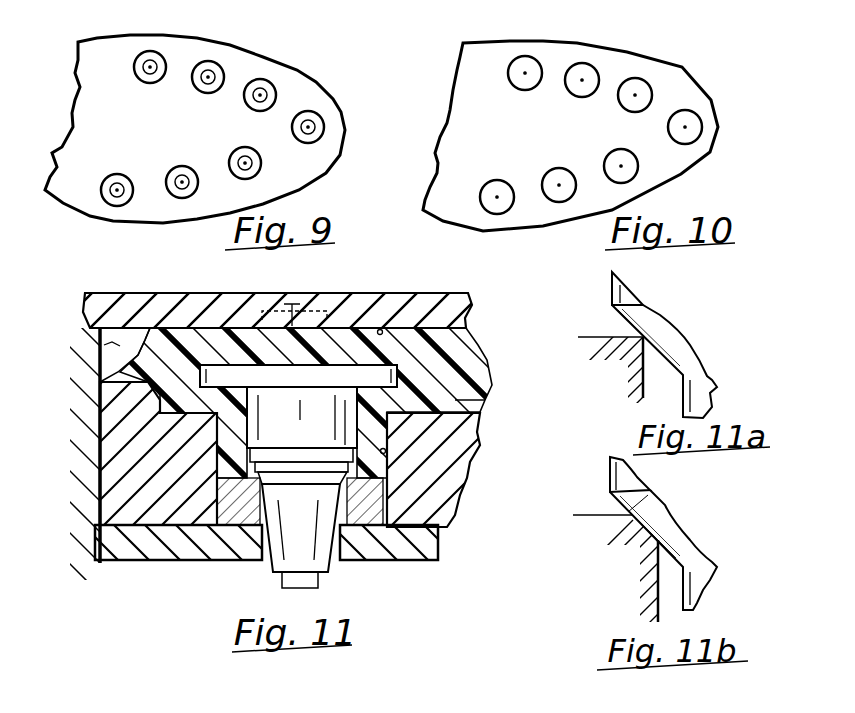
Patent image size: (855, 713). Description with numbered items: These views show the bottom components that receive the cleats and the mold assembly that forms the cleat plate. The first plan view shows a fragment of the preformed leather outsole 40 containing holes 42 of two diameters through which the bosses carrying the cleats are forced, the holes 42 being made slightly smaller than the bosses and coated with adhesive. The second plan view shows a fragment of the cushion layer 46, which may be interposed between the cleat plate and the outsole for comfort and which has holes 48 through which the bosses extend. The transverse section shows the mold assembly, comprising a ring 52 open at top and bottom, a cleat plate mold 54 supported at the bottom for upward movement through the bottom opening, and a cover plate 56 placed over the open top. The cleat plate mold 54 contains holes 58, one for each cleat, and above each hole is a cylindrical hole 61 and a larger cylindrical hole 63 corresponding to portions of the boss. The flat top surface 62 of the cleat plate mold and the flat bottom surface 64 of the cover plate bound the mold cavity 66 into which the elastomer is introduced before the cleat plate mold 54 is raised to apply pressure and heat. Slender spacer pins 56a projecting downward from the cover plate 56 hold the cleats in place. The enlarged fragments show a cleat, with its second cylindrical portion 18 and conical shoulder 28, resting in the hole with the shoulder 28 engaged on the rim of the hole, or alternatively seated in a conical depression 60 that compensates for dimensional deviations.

In FIG. 11A, the second cylindrical portion 18 is at (611, 297).
In FIG. 11B, the second cylindrical portion 18 is at (609, 480).
In FIG. 11, the conical shoulder 28 is at (248, 493).
In FIG. 11A, the conical shoulder 28 is at (666, 367).
In FIG. 11B, the conical shoulder 28 is at (673, 565).
In FIG. 9, the leather outsole 40 is at (286, 76).
In FIG. 9, the holes 42 is at (276, 95).
In FIG. 10, the cushion layer 46 is at (663, 93).
In FIG. 10, the holes 48 is at (582, 97).
In FIG. 11, the ring 52 is at (82, 573).
In FIG. 11, the cleat plate mold 54 is at (151, 569).
In FIG. 11, the cover plate 56 is at (204, 304).
In FIG. 11, the spacer pins 56a is at (278, 307).
In FIG. 11, the holes 58 is at (332, 552).
In FIG. 11B, the conical depression 60 is at (650, 540).
In FIG. 11, the cylindrical hole 61 is at (386, 451).
In FIG. 11, the top surface 62 is at (110, 379).
In FIG. 11, the cylindrical hole 63 is at (487, 398).
In FIG. 11, the bottom surface 64 is at (381, 330).
In FIG. 11, the mold cavity 66 is at (108, 343).